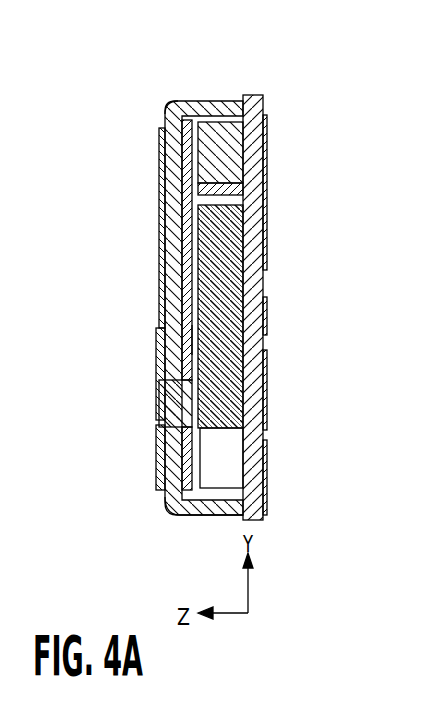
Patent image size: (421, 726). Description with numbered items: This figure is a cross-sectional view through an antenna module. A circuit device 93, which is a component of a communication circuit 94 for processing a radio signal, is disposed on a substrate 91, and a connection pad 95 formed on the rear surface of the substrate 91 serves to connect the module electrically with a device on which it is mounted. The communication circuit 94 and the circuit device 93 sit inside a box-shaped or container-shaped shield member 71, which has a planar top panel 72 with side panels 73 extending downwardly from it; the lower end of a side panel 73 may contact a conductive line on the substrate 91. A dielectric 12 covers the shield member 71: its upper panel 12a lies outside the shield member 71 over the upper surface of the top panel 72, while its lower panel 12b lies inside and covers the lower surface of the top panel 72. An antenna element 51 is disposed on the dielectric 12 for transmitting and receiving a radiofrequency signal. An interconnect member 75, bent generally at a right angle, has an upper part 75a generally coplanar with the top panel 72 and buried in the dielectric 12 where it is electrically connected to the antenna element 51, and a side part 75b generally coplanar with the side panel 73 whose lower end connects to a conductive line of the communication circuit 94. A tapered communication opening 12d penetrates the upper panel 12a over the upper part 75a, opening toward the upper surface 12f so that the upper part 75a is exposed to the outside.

The dielectric 12 is at (161, 130).
The upper panel 12a is at (160, 308).
The lower panel 12b is at (189, 340).
The communication opening 12d is at (163, 452).
The upper surface 12f is at (160, 156).
The antenna element 51 is at (166, 396).
The shield member 71 is at (168, 101).
The top panel 72 is at (173, 280).
The side panel 73 is at (208, 101).
The interconnect member 75 is at (177, 514).
The upper part 75a is at (167, 498).
The side part 75b is at (197, 515).
The substrate 91 is at (250, 95).
The circuit device 93 is at (229, 286).
The communication circuit 94 is at (197, 191).
The connection pad 95 is at (266, 158).